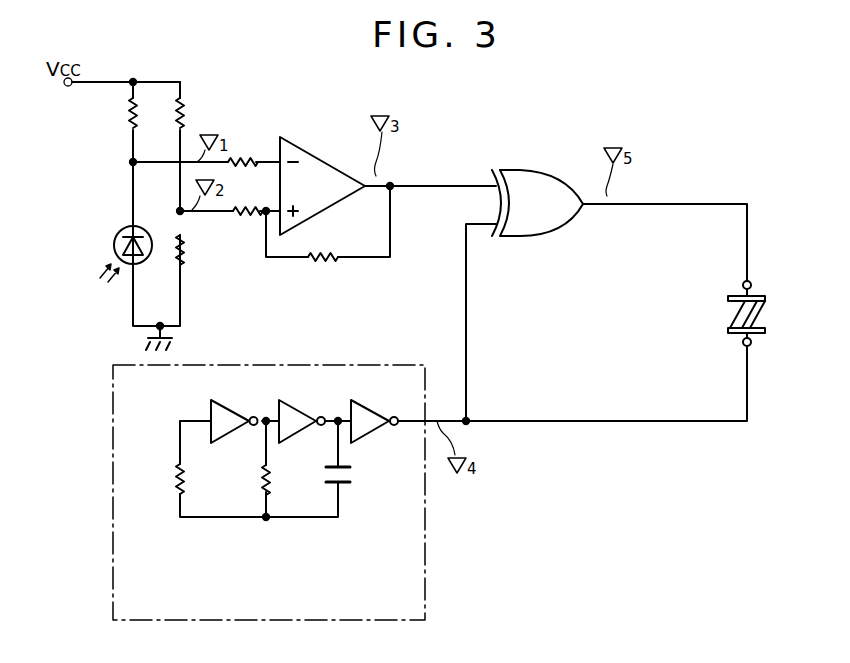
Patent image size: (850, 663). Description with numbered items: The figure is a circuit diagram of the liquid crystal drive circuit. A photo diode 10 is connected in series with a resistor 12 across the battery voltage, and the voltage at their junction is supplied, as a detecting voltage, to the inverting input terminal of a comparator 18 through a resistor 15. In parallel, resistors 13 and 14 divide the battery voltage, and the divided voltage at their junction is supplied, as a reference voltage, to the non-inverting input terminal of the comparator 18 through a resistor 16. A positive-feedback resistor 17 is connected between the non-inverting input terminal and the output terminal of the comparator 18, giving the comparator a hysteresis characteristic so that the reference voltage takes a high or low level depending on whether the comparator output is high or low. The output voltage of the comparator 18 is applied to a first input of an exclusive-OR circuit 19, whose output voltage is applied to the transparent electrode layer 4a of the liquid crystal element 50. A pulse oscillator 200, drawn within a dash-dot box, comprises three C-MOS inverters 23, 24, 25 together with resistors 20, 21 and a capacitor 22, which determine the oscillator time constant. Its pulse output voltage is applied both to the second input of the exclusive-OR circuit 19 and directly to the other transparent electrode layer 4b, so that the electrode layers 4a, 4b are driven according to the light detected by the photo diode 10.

The photo diode 10 is at (114, 245).
The resistor 12 is at (129, 120).
The resistor 13 is at (186, 115).
The resistor 14 is at (186, 261).
The resistor 15 is at (243, 156).
The resistor 16 is at (241, 216).
The positive-feedback resistor 17 is at (318, 262).
The comparator 18 is at (346, 167).
The exclusive-OR circuit 19 is at (545, 186).
The resistor 20 is at (174, 481).
The resistor 21 is at (260, 478).
The capacitor 22 is at (352, 481).
The C-MOS inverter 23 is at (231, 412).
The C-MOS inverter 24 is at (300, 412).
The C-MOS inverter 25 is at (378, 412).
The piezoelectric element 50 is at (741, 296).
The transparent electrode layer 4a is at (765, 297).
The transparent electrode layer 4b is at (769, 331).
The pulse oscillator 200 is at (425, 541).